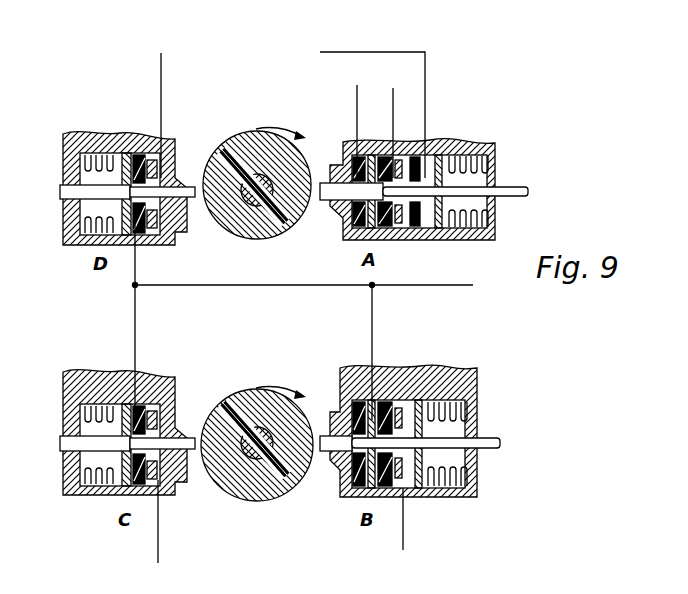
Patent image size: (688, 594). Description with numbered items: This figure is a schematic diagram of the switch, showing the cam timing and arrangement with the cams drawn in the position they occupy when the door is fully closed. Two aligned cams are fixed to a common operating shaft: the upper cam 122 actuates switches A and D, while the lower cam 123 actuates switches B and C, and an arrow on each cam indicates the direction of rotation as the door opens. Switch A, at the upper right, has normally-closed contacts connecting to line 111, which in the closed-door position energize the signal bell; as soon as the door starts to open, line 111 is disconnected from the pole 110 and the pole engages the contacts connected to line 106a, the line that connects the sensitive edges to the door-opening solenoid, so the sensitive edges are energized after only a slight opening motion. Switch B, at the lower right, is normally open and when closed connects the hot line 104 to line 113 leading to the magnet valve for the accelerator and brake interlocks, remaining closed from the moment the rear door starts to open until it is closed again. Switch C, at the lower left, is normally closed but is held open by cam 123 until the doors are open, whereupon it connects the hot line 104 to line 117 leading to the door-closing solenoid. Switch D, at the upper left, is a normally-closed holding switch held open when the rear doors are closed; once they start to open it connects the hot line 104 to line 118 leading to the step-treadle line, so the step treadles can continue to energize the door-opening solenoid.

The hot line 104 is at (472, 262).
The line 106a is at (358, 52).
The pole 110 is at (393, 112).
The line 111 is at (357, 102).
The line 113 is at (403, 540).
The line 117 is at (158, 545).
The line 118 is at (161, 72).
The upper cam 122 is at (257, 177).
The lower cam 123 is at (257, 435).